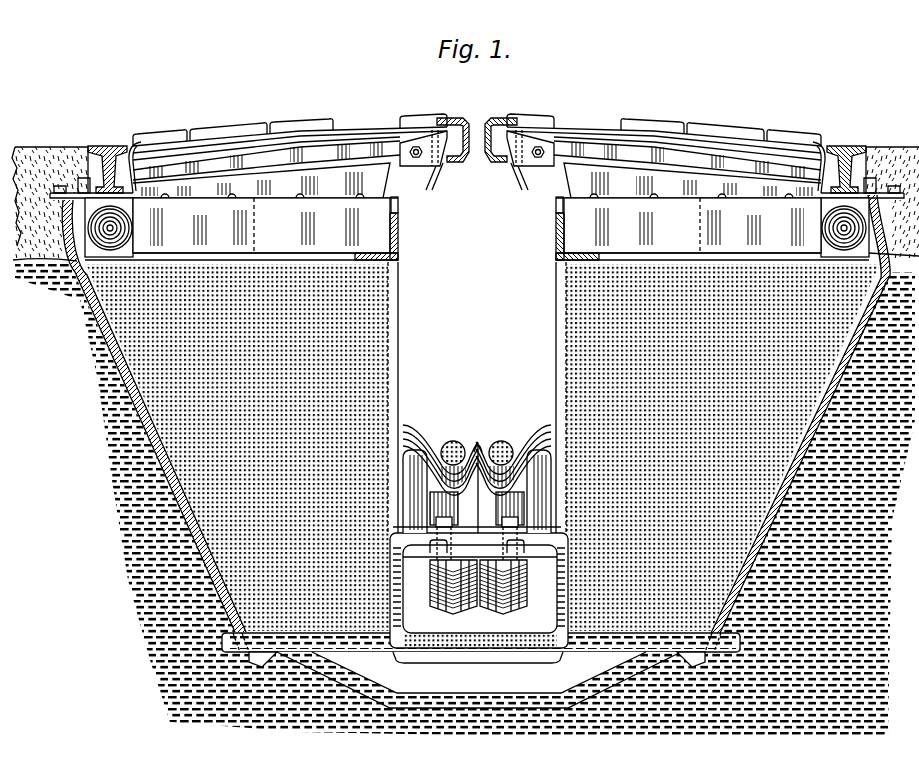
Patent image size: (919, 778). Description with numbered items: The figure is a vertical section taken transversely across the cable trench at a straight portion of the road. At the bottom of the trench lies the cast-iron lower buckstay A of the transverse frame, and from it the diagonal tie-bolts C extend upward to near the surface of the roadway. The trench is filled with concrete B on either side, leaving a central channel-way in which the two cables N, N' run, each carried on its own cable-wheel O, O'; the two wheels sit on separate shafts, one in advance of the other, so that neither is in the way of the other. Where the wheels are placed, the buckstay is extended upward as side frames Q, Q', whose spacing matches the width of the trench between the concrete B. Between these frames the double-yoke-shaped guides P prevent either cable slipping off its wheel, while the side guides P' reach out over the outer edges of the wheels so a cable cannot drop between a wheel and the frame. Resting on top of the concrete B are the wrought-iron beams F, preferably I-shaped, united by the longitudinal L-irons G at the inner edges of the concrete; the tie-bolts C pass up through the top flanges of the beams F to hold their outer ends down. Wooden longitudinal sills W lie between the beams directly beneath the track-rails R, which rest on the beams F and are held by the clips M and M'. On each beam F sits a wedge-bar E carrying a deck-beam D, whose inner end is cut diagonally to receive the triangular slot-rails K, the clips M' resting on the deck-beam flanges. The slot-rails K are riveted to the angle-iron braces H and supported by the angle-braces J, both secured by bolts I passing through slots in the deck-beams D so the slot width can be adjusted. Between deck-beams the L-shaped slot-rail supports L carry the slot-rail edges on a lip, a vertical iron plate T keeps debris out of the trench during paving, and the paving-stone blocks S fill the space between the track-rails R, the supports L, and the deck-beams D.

The lower buckstay A is at (481, 670).
The concrete B is at (483, 447).
The diagonal tie-bolts C is at (142, 418).
The deck-beam D is at (477, 160).
The wedge-bar E is at (477, 180).
The iron beams F is at (477, 227).
The longitudinal L-irons G is at (399, 240).
The angle-iron braces H is at (438, 167).
The bolts I is at (415, 160).
The angle-braces J is at (462, 119).
The slot-rails K is at (460, 118).
The slot-rail supports L is at (445, 140).
The clip M is at (474, 155).
The clip M' is at (477, 149).
The cable N is at (453, 457).
The cable N' is at (501, 457).
The cable-wheel O is at (453, 595).
The cable-wheel O' is at (503, 595).
The double-yoke-shaped guides P is at (477, 482).
The side guides P' is at (477, 468).
The side frames Q is at (479, 590).
The spring box wall Q' is at (550, 587).
The track-rails R is at (104, 146).
The paving-stone blocks S is at (318, 131).
The vertical sheet or plate of iron T is at (398, 208).
The longitudinal sills W is at (136, 227).